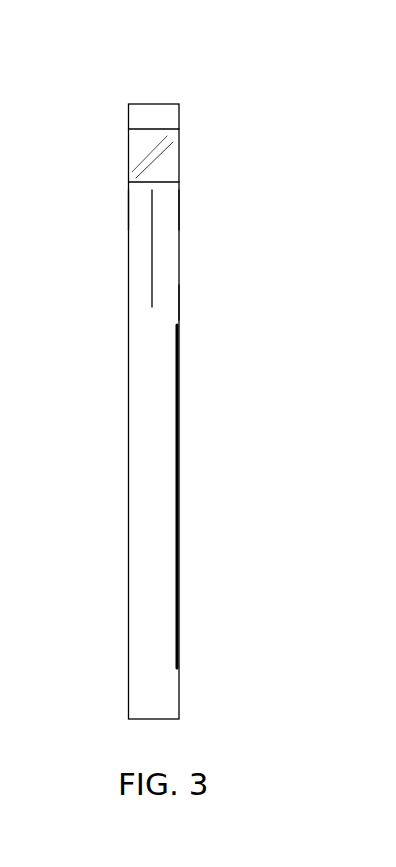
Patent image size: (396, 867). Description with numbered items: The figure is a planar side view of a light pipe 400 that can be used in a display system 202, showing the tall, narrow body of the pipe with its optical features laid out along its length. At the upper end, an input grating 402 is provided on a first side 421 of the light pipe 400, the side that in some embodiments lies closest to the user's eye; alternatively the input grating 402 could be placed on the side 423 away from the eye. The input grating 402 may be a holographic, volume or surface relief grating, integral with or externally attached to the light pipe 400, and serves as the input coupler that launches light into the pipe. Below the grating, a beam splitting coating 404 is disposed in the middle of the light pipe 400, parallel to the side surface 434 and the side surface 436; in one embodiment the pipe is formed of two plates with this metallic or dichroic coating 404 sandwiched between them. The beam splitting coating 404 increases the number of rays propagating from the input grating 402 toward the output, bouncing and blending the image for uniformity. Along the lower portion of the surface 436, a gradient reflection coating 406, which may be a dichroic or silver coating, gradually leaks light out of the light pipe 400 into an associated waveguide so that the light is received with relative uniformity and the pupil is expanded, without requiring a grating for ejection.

The display system 202 is at (284, 222).
The light pipe 400 is at (171, 104).
The first side 421 is at (134, 107).
The input grating 402 is at (134, 144).
The surface 434 is at (128, 207).
The surface 436 is at (180, 205).
The beam splitting coating 404 is at (152, 267).
The side 423 is at (172, 300).
The gradient reflection coating 406 is at (175, 411).